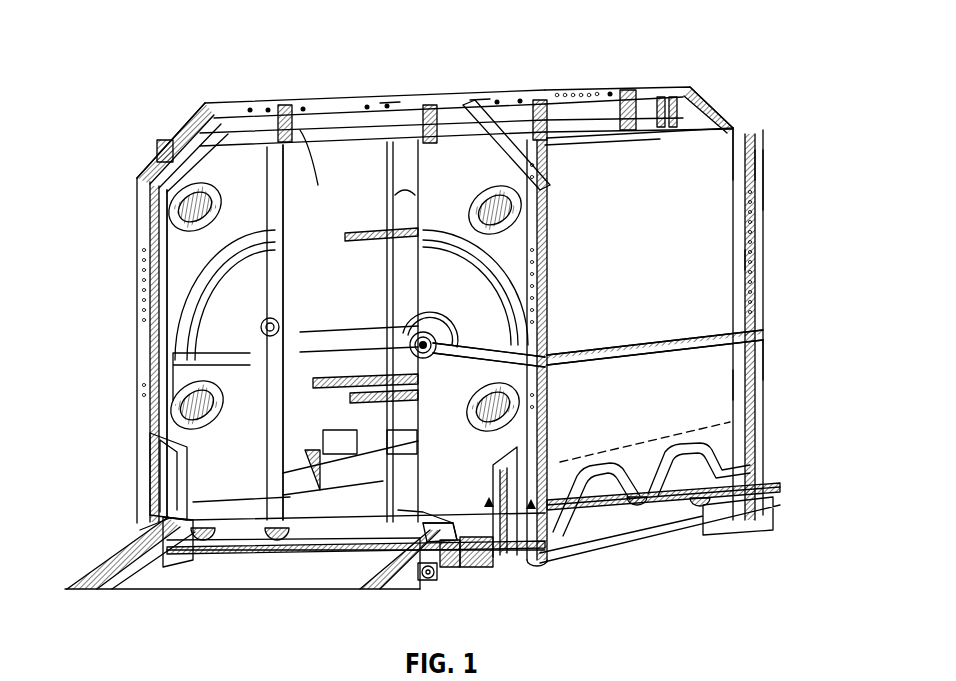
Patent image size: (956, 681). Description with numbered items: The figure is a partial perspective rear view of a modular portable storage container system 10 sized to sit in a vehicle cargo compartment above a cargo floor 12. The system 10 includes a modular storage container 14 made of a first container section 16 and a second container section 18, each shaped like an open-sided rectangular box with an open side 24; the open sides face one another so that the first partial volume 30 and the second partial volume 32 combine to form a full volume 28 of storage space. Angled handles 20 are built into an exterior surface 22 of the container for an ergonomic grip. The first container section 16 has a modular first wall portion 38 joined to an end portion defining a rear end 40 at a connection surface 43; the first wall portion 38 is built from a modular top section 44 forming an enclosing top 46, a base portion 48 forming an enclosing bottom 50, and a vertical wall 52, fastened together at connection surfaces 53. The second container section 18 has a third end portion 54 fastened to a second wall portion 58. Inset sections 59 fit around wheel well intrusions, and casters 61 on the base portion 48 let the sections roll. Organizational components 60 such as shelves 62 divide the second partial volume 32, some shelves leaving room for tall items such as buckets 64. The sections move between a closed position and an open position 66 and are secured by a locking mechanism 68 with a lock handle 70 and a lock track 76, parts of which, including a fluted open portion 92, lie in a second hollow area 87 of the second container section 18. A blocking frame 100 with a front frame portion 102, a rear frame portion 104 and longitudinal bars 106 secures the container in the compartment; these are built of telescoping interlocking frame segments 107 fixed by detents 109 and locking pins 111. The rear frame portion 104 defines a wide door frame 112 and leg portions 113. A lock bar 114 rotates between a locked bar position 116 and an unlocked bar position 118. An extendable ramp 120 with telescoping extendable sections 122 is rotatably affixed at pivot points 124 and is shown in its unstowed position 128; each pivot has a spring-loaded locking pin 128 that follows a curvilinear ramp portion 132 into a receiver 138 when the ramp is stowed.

The modular portable storage container system 10 is at (803, 35).
The cargo floor 12 is at (640, 507).
The modular storage container 14 is at (710, 158).
The first container section 16 is at (755, 201).
The second container section 18 is at (163, 248).
The handles 20 is at (175, 215).
The exterior surface 22 is at (522, 565).
The open side 24 is at (420, 292).
The full volume 28 is at (447, 156).
The first partial volume 30 is at (412, 205).
The second partial volume 32 is at (331, 313).
The first wall portion 38 is at (653, 291).
The rear end 40 is at (262, 478).
The connection surface 43 is at (568, 100).
The modular top section 44 is at (435, 110).
The enclosing top 46 is at (635, 110).
The base portion 48 is at (473, 568).
The enclosing bottom 50 is at (270, 560).
The vertical wall 52 is at (756, 366).
The connection surfaces 53 is at (735, 383).
The third end portion 54 is at (340, 468).
The second wall portion 58 is at (318, 185).
The inset sections 59 is at (748, 446).
The organizational components 60 is at (378, 258).
The casters 61 is at (213, 545).
The shelves 62 is at (356, 323).
The buckets 64 is at (353, 455).
The open position 66 is at (806, 260).
The locking mechanism 68 is at (447, 320).
The lock handle 70 is at (538, 315).
The lock track 76 is at (162, 315).
The second hollow area 87 is at (261, 327).
The fluted open portion 92 is at (178, 312).
The blocking frame 100 is at (770, 333).
The front frame portion 102 is at (773, 162).
The rear frame portion 104 is at (160, 158).
The longitudinal bars 106 is at (515, 95).
The interlocking frame segments 107 is at (185, 135).
The detents 109 is at (430, 100).
The locking pins 111 is at (548, 375).
The wide door frame 112 is at (130, 468).
The leg portions 113 is at (165, 505).
The lock bar 114 is at (481, 51).
The locked bar position 116 is at (396, 100).
The unlocked bar position 118 is at (478, 100).
The extendable ramp 120 is at (86, 558).
The extendable sections 122 is at (333, 568).
The pivot points 124 is at (187, 552).
The spring-loaded locking pin 128 is at (247, 586).
The curvilinear ramp portion 132 is at (398, 510).
The receiver 138 is at (460, 525).